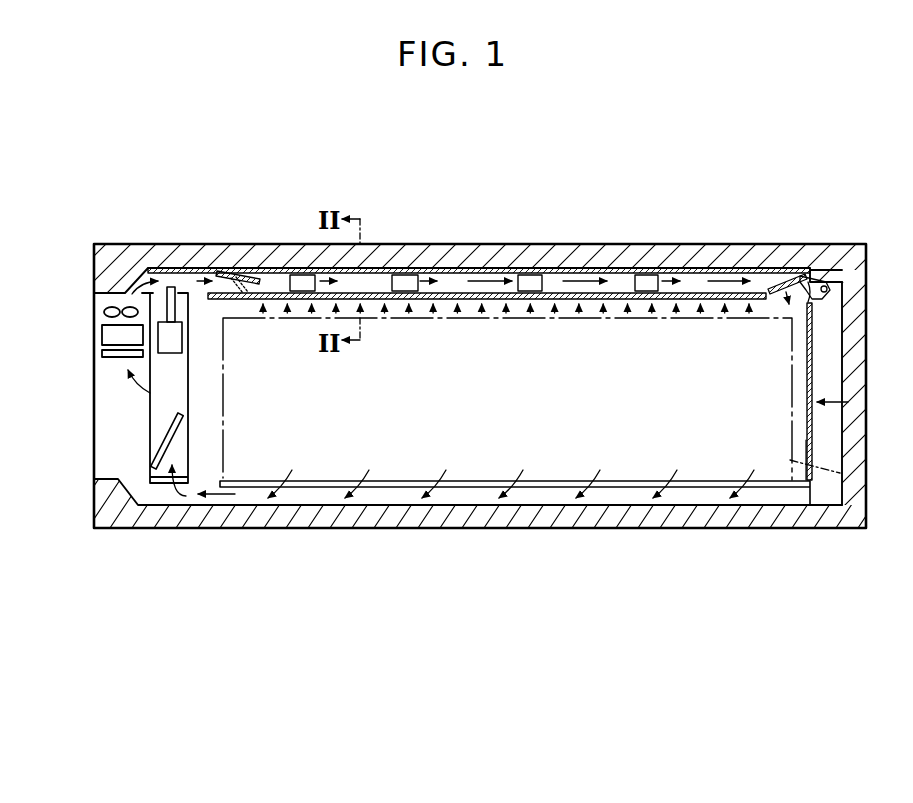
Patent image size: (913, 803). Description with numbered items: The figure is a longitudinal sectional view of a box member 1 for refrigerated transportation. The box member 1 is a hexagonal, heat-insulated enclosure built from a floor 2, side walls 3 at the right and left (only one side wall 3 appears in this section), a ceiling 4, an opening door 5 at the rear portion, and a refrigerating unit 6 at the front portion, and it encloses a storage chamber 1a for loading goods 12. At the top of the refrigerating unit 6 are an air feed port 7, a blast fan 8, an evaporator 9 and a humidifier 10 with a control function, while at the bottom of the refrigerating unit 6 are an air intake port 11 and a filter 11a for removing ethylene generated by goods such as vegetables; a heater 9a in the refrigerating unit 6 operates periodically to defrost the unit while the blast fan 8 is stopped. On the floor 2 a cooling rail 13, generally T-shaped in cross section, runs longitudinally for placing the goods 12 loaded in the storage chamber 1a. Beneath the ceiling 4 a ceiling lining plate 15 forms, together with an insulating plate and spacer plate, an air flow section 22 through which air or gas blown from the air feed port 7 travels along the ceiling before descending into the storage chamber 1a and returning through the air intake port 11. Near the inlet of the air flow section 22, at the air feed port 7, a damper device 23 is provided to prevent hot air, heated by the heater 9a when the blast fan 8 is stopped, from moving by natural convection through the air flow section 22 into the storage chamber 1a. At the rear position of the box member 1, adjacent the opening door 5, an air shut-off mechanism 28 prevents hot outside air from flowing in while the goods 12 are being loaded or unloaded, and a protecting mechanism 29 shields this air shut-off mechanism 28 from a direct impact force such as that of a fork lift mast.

The box member 1 is at (636, 243).
The storage chamber 1a is at (798, 450).
The floor 2 is at (418, 522).
The side wall 3 is at (688, 303).
The ceiling 4 is at (576, 252).
The opening door 5 is at (862, 423).
The refrigerating unit 6 is at (117, 418).
The air feed port 7 is at (131, 283).
The blast fan 8 is at (103, 311).
The evaporator 9 is at (103, 336).
The heater 9a is at (103, 355).
The humidifier 10 is at (170, 353).
The air intake port 11 is at (168, 497).
The filter 11a is at (153, 452).
The goods 12 is at (840, 473).
The cooling rail 13 is at (613, 488).
The ceiling lining plate 15 is at (478, 270).
The air flow section 22 is at (443, 287).
The damper device 23 is at (256, 268).
The air shut-off mechanism 28 is at (847, 401).
The protecting mechanism 29 is at (838, 297).